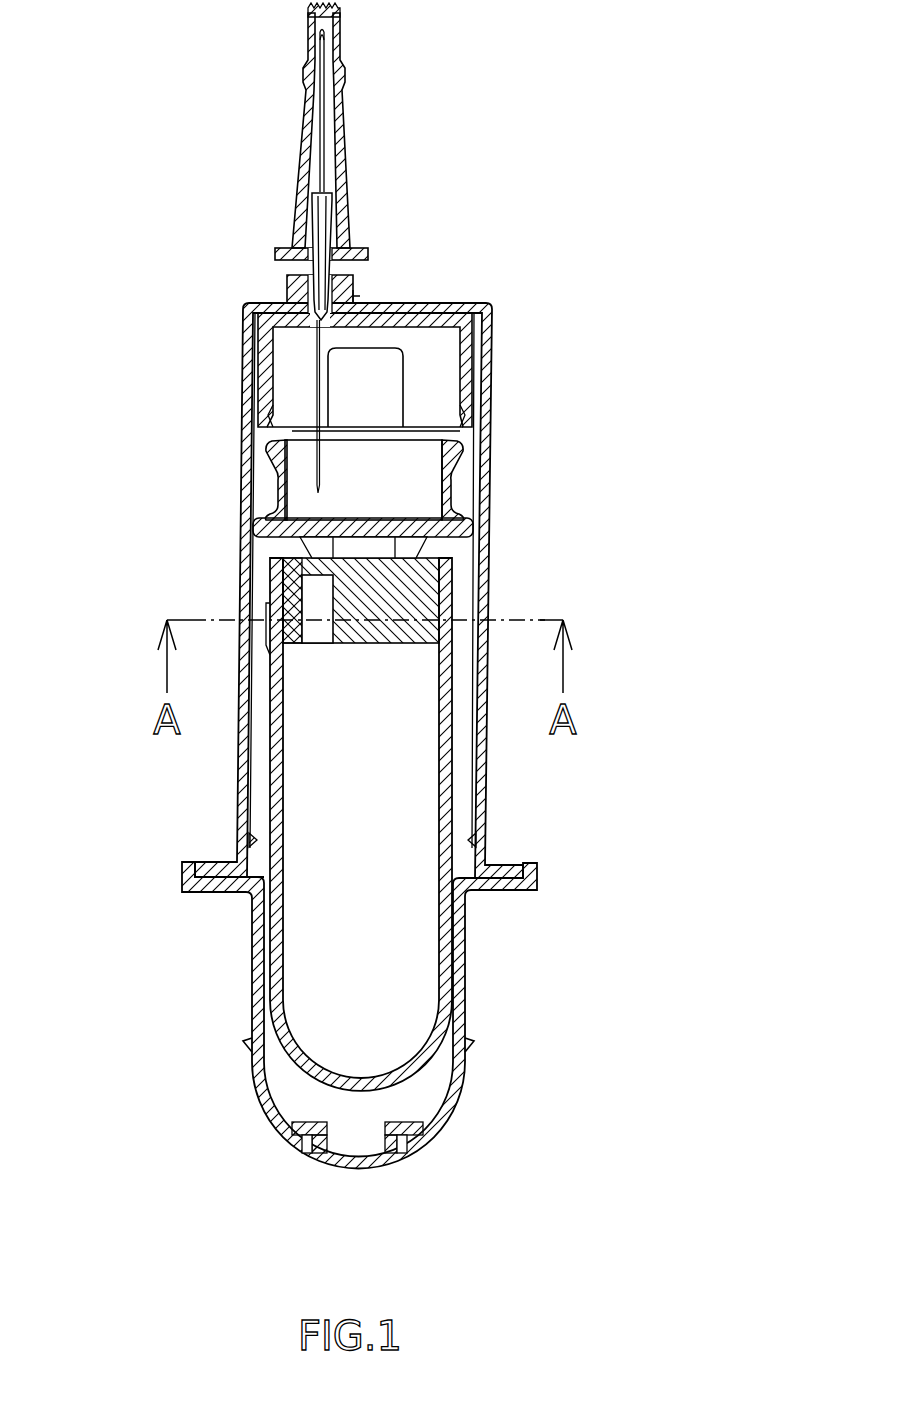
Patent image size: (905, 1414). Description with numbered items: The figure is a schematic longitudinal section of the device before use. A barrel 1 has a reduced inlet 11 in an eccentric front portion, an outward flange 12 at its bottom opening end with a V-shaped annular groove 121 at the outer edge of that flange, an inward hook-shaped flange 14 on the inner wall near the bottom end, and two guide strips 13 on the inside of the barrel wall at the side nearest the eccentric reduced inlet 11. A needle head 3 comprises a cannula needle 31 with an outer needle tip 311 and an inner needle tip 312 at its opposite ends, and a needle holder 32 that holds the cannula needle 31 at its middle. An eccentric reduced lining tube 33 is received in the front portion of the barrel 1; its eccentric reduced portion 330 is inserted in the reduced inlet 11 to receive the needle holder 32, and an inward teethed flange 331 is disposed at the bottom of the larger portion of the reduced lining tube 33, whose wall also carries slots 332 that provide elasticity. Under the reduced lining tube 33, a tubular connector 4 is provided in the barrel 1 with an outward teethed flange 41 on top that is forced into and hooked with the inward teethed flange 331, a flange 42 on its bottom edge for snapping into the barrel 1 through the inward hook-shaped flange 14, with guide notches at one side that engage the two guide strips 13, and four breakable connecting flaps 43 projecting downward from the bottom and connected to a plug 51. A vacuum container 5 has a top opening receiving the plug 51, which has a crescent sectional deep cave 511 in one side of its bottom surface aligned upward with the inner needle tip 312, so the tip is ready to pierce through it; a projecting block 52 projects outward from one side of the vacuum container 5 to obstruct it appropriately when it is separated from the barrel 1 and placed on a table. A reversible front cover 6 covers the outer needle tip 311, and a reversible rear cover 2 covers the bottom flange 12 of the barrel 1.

The barrel 1 is at (487, 348).
The reduced inlet 11 is at (353, 282).
The outward flange 12 is at (205, 893).
The V-shaped annular groove 121 is at (195, 879).
The guide strips 13 is at (250, 455).
The inward hook-shaped flange 14 is at (243, 838).
The reversible rear cover 2 is at (463, 980).
The needle head 3 is at (288, 261).
The cannula needle 31 is at (322, 140).
The outer needle tip 311 is at (322, 60).
The inner needle tip 312 is at (318, 488).
The needle holder 32 is at (318, 226).
The reduced lining tube 33 is at (290, 314).
The eccentric reduced portion 330 is at (353, 296).
The inward teethed flange 331 is at (262, 412).
The slots 332 is at (363, 396).
The tubular connector 4 is at (452, 494).
The outward teethed flange 41 is at (457, 450).
The flange 42 is at (470, 535).
The breakable connecting flaps 43 is at (315, 549).
The vacuum container 5 is at (453, 785).
The plug 51 is at (400, 612).
The crescent sectional deep cave 511 is at (320, 599).
The projecting block 52 is at (265, 640).
The reversible front cover 6 is at (343, 100).